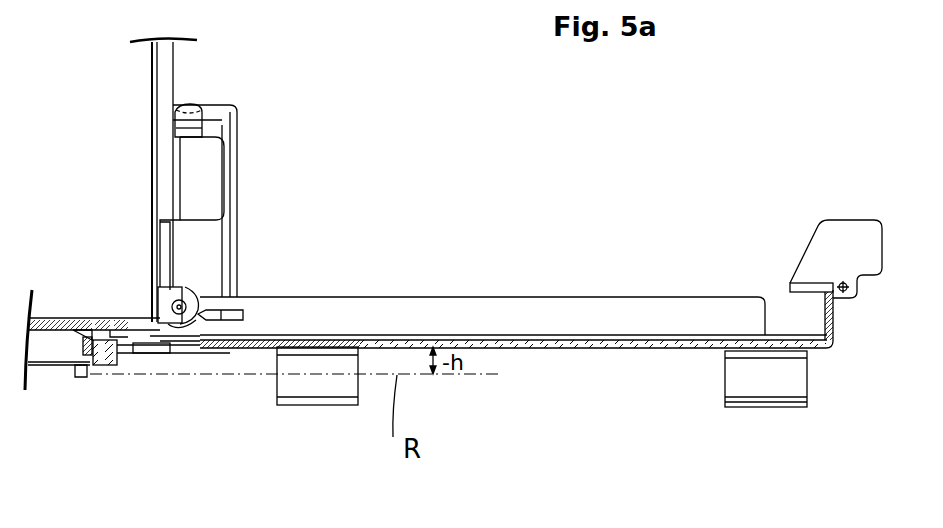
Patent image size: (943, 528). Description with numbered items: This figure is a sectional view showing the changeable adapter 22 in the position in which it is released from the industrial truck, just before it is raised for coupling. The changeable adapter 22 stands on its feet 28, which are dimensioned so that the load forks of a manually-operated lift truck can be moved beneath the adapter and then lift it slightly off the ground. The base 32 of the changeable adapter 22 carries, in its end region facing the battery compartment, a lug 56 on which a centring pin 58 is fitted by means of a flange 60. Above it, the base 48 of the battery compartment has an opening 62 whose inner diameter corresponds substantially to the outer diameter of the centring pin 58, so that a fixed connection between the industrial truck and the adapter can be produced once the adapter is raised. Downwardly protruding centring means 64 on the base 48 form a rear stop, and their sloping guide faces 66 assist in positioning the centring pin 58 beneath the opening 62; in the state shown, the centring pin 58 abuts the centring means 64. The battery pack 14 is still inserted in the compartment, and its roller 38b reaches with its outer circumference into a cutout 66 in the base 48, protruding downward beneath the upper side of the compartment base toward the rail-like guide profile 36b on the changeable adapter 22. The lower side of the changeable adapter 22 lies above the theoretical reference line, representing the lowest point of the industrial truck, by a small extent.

The battery pack 14 is at (153, 83).
The changeable adapter 22 is at (560, 286).
The feet 28 is at (310, 402).
The base 32 is at (615, 348).
The guide profile 36b is at (368, 337).
The roller 38b is at (186, 287).
The base of the battery compartment 48 is at (43, 323).
The lug 56 is at (163, 345).
The centring pin 58 is at (110, 367).
The flange 60 is at (135, 370).
The opening 62 is at (107, 327).
The centring means 64 is at (72, 327).
The cutout 66 is at (197, 322).